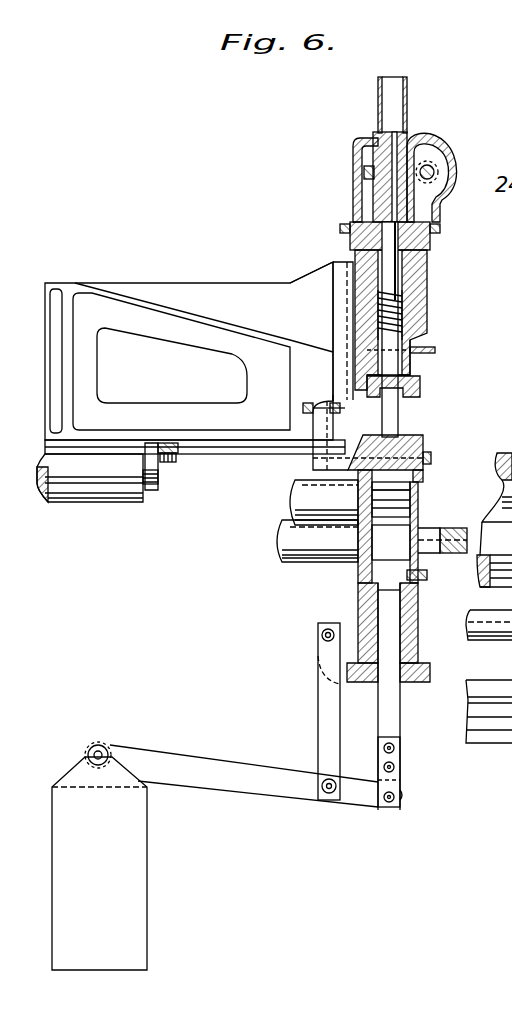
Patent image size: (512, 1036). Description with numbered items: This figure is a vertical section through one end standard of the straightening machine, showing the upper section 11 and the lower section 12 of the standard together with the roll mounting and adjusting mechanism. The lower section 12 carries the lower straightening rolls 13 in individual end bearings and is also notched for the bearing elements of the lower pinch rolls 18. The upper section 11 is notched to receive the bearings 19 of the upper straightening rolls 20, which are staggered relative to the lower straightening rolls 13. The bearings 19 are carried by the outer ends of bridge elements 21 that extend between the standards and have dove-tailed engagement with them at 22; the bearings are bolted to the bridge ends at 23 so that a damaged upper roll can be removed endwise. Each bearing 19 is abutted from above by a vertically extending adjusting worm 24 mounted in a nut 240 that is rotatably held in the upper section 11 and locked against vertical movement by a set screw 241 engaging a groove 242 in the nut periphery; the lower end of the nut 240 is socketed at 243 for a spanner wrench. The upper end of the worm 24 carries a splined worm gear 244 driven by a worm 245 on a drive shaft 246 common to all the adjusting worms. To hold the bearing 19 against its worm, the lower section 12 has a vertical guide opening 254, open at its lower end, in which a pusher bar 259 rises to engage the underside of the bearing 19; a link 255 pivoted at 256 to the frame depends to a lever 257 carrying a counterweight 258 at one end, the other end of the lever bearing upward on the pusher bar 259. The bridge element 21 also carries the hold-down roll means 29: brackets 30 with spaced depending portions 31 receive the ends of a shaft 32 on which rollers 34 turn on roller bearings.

The upper section 11 is at (404, 292).
The lower section 12 is at (357, 610).
The lower straightening rolls 13 is at (298, 566).
The lower pinch rolls 18 is at (482, 597).
The bearings 19 is at (437, 420).
The upper straightening rolls 20 is at (312, 500).
The bridge elements 21 is at (166, 302).
The dove-tailed engagement 22 is at (350, 258).
The bolts 23 is at (318, 409).
The adjusting worm 24 is at (416, 350).
The hold-down roll means 29 is at (176, 463).
The brackets 30 is at (92, 450).
The depending portions 31 is at (150, 484).
The shaft 32 is at (150, 496).
The rollers 34 is at (105, 506).
The nut 240 is at (411, 373).
The set screw 241 is at (435, 350).
The groove 242 is at (355, 340).
The socket 243 is at (421, 393).
The worm gear 244 is at (368, 172).
The worm 245 is at (441, 172).
The drive shaft 246 is at (430, 166).
The vertical guide openings 254 is at (400, 648).
The link 255 is at (330, 720).
The pivotal connection 256 is at (324, 641).
The lever 257 is at (250, 800).
The counterweight 258 is at (99, 863).
The pusher bar 259 is at (403, 760).